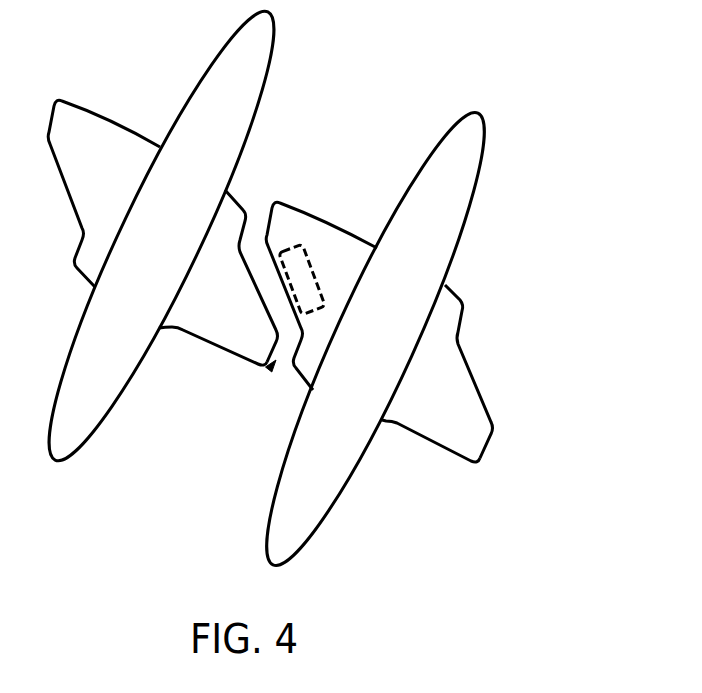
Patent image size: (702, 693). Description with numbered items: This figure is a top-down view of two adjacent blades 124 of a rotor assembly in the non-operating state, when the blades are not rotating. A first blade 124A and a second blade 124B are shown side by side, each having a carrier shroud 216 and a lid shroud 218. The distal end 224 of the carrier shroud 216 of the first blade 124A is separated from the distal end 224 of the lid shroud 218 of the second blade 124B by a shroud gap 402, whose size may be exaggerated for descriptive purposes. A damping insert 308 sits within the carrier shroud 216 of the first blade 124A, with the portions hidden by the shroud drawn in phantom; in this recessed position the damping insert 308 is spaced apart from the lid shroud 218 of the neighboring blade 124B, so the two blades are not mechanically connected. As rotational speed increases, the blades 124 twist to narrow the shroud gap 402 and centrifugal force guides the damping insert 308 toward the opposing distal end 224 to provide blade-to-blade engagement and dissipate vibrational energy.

The blades 124 is at (217, 60).
The first blade 124A is at (443, 140).
The second blade 124B is at (161, 238).
The carrier shroud 216 is at (80, 127).
The lid shroud 218 is at (188, 318).
The distal end 224 is at (250, 242).
The damping insert 308 is at (294, 243).
The shroud gap 402 is at (268, 370).